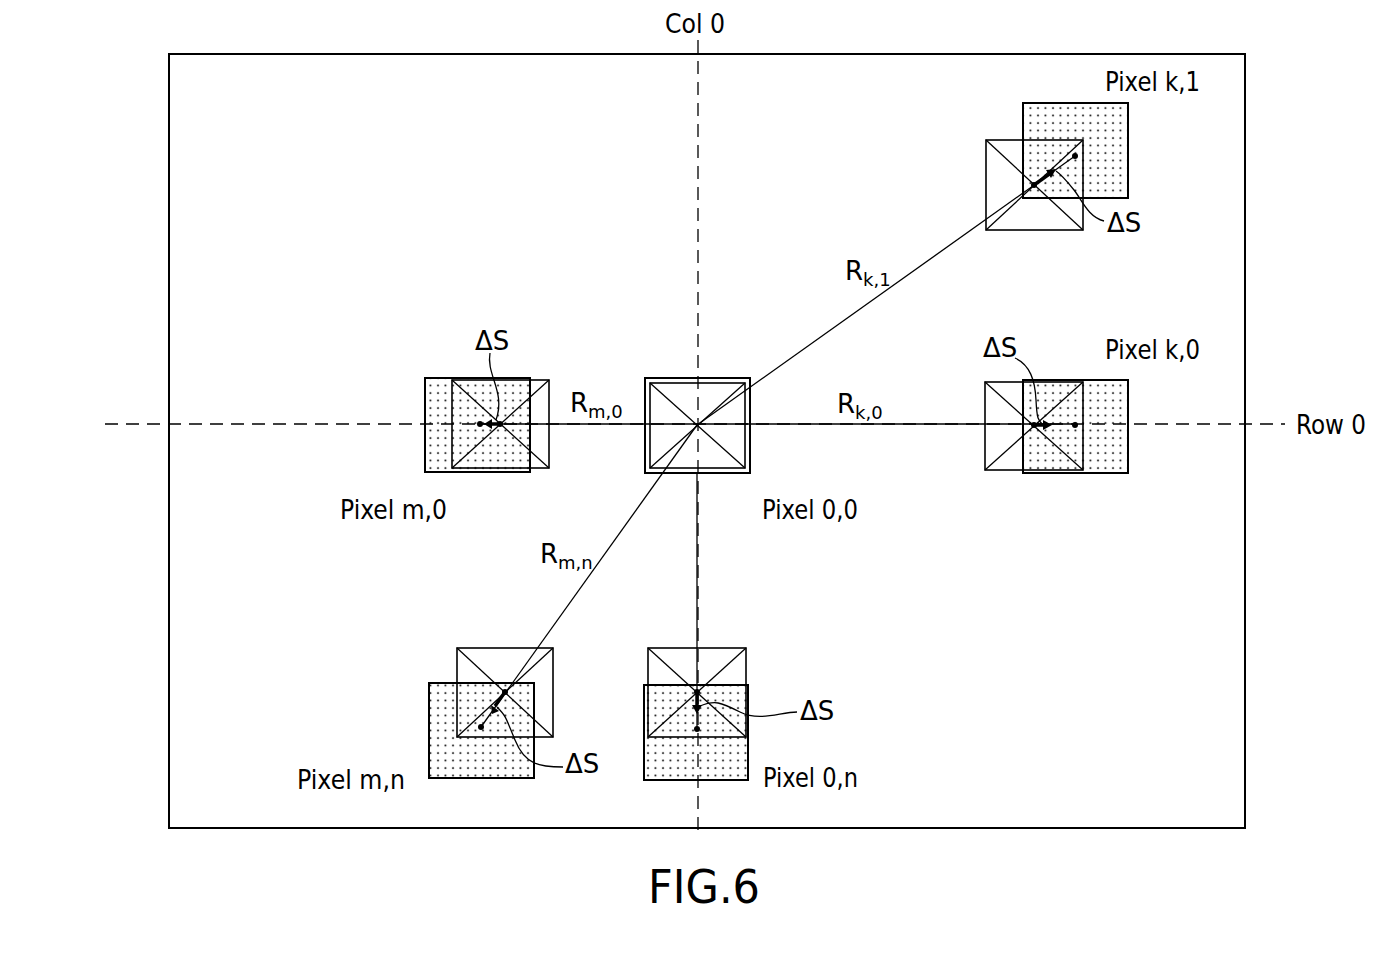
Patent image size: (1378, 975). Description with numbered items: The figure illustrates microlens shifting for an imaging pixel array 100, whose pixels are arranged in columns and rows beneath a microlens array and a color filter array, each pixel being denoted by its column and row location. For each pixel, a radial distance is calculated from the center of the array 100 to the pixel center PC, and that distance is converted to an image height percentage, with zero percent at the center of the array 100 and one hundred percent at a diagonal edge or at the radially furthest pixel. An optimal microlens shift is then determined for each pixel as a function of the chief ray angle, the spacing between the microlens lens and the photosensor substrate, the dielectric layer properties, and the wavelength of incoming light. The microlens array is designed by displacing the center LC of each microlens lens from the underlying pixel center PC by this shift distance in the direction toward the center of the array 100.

The imaging pixel array 100 is at (1245, 193).
The microlens center LC is at (1034, 185).
The pixel center PC is at (1075, 157).
The microlens lens is at (1034, 230).